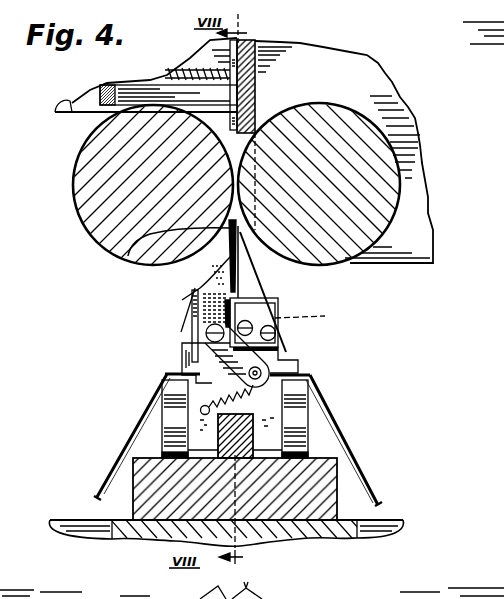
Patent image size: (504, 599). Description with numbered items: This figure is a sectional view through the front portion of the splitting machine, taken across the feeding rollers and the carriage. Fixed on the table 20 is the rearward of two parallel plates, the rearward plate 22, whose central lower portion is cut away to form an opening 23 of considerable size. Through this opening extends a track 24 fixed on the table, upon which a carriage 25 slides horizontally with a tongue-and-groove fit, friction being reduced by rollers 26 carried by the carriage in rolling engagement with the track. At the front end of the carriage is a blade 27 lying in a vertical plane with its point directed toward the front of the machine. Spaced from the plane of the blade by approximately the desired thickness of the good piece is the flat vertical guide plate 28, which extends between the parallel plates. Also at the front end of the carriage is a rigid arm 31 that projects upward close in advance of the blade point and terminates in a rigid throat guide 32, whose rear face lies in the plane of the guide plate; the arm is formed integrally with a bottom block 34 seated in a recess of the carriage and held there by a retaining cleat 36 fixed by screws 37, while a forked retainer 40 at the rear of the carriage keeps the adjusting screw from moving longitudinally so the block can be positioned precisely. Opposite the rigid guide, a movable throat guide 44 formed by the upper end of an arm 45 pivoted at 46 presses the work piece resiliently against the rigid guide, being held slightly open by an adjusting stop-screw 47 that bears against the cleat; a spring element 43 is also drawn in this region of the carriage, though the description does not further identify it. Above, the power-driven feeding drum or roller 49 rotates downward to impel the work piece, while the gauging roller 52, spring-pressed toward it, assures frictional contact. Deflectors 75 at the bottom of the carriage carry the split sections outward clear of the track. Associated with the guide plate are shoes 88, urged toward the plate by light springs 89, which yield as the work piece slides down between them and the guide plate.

The table 20 is at (330, 538).
The rearward plate 22 is at (374, 90).
The opening 23 is at (68, 102).
The track 24 is at (337, 468).
The carriage 25 is at (284, 390).
The rollers 26 is at (183, 437).
The blade 27 is at (128, 256).
The guide plate 28 is at (262, 44).
The rigid arm 31 is at (262, 292).
The rigid throat guide 32 is at (244, 258).
The bottom block 34 is at (325, 316).
The retaining cleat 36 is at (280, 331).
The screws 37 is at (268, 350).
The forked retainer 40 is at (200, 360).
The spring 43 is at (246, 392).
The movable throat guide 44 is at (228, 247).
The pivoted arm 45 is at (214, 283).
The pivot 46 is at (206, 335).
The adjusting stop-screw 47 is at (272, 306).
The feeding drum or roller 49 is at (386, 160).
The gauging roller 52 is at (92, 176).
The deflectors 75 is at (96, 495).
The shoe 88 is at (240, 90).
The light springs 89 is at (180, 80).